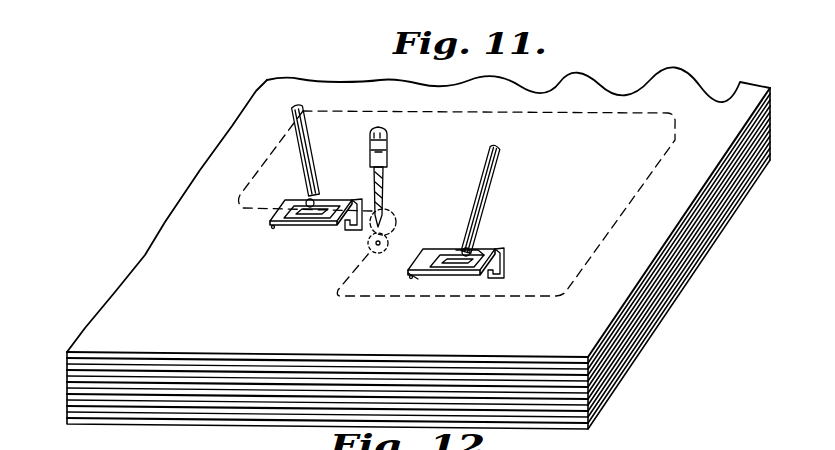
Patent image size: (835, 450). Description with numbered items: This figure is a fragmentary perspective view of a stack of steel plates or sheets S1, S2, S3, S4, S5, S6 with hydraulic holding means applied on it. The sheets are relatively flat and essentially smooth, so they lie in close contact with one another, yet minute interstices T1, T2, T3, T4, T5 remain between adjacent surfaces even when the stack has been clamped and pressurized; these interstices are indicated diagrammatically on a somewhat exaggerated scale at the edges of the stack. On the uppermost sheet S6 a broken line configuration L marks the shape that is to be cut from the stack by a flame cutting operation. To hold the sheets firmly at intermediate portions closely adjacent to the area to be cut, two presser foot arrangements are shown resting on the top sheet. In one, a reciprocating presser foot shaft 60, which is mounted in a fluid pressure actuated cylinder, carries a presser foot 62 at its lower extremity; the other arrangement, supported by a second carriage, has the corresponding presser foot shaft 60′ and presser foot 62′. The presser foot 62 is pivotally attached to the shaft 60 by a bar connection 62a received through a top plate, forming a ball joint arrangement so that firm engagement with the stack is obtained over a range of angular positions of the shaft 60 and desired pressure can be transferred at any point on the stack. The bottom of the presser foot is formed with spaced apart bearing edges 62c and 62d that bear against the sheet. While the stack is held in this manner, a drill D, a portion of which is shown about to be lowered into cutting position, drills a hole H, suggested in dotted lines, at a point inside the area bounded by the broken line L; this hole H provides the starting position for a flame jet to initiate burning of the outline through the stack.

The presser foot shaft 60 is at (497, 186).
The presser foot shaft 60′ is at (310, 150).
The presser foot 62 is at (503, 252).
The presser foot 62′ is at (315, 224).
The bar connection 62a is at (477, 248).
The bearing edge 62c is at (494, 278).
The bearing edge 62d is at (418, 281).
The drill D is at (389, 148).
The hole H is at (389, 241).
The broken line configuration L is at (678, 138).
The sheet S1 is at (72, 424).
The sheet S2 is at (68, 412).
The sheet S3 is at (68, 398).
The sheet S4 is at (70, 384).
The sheet S5 is at (70, 369).
The sheet S6 is at (80, 357).
The interstice T1 is at (595, 369).
The interstice T2 is at (600, 384).
The interstice T3 is at (612, 399).
The interstice T4 is at (612, 413).
The interstice T5 is at (605, 424).